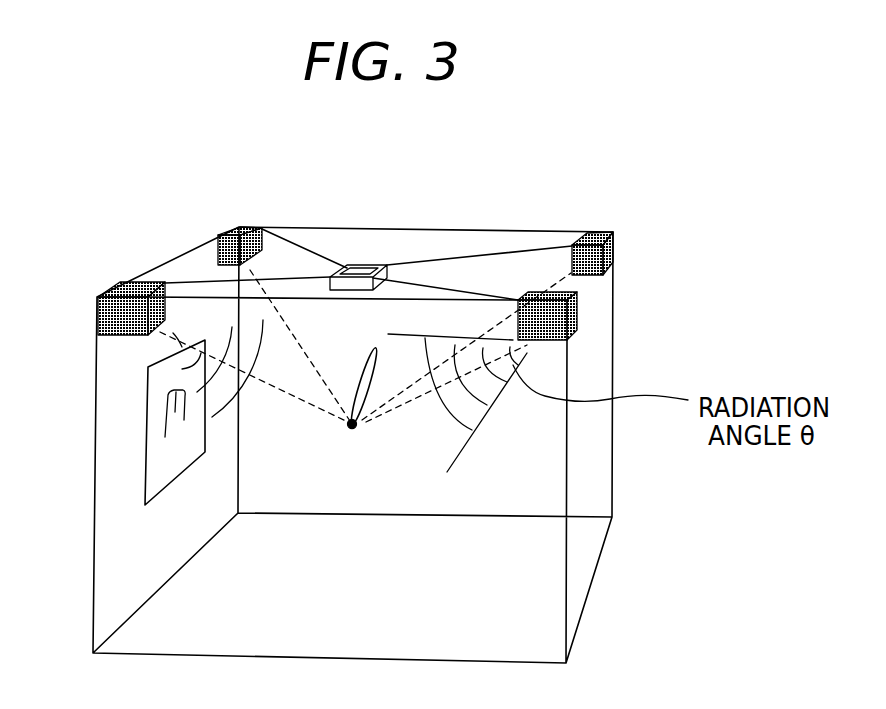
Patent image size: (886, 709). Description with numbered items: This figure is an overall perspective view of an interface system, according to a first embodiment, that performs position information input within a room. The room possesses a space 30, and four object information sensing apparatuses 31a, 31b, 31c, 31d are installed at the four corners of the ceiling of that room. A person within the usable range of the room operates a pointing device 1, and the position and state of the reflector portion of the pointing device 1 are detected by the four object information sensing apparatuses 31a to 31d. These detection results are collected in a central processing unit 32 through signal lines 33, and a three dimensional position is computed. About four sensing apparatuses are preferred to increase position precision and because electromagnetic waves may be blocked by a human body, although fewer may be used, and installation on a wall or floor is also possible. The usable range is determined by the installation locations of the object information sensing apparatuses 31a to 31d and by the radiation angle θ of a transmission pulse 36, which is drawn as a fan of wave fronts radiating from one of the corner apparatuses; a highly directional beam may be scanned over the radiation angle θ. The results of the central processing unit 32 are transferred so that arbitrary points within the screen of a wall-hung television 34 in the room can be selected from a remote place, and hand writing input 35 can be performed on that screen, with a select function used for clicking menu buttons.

The pointing device 1 is at (366, 395).
The space 30 is at (612, 485).
The object information sensing apparatus 31a is at (252, 228).
The object information sensing apparatus 31b is at (128, 290).
The object information sensing apparatus 31c is at (600, 232).
The object information sensing apparatus 31d is at (577, 320).
The central processing unit 32 is at (358, 266).
The signal lines 33 is at (458, 258).
The wall-hung television 34 is at (156, 465).
The hand writing input 35 is at (168, 397).
The transmission pulse 36 is at (442, 413).